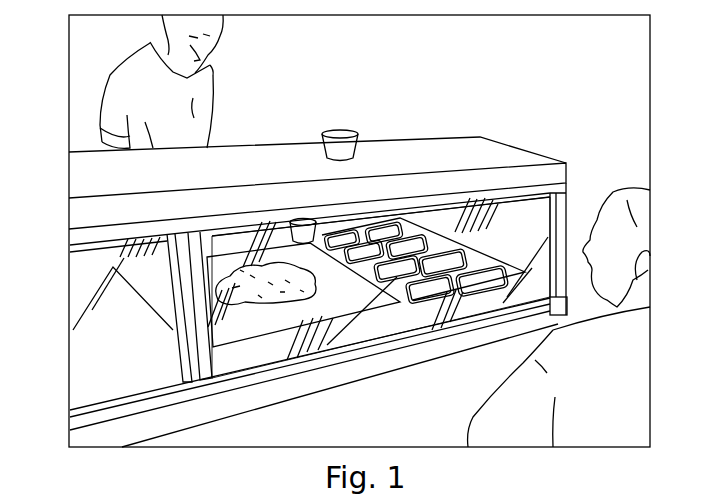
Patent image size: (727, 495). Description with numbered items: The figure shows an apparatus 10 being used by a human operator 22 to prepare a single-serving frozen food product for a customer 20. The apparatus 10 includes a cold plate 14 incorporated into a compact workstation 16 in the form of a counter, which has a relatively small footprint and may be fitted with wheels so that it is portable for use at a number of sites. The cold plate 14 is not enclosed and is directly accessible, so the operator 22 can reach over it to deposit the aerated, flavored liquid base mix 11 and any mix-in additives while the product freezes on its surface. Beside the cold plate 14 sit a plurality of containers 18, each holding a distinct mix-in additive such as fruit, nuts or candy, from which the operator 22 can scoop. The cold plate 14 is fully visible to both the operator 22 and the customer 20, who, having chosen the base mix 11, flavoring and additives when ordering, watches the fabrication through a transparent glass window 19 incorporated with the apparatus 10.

The apparatus 10 is at (92, 178).
The aerated, flavored liquid base mix 11 is at (250, 280).
The cold plate 14 is at (245, 315).
The workstation 16 is at (353, 362).
The containers 18 is at (478, 281).
The transparent glass window 19 is at (523, 226).
The customer 20 is at (655, 220).
The human operator 22 is at (100, 67).